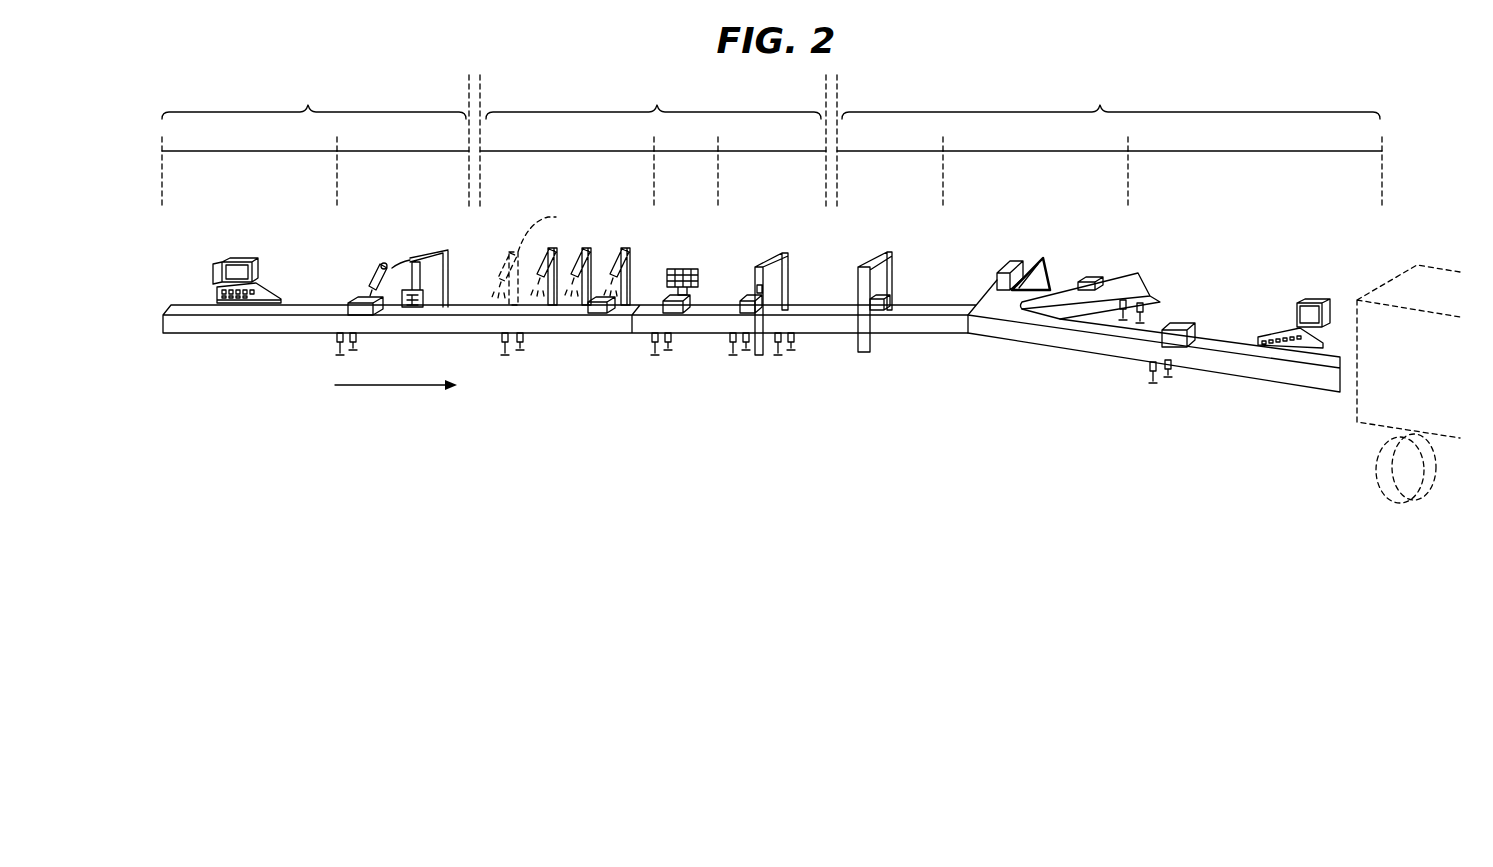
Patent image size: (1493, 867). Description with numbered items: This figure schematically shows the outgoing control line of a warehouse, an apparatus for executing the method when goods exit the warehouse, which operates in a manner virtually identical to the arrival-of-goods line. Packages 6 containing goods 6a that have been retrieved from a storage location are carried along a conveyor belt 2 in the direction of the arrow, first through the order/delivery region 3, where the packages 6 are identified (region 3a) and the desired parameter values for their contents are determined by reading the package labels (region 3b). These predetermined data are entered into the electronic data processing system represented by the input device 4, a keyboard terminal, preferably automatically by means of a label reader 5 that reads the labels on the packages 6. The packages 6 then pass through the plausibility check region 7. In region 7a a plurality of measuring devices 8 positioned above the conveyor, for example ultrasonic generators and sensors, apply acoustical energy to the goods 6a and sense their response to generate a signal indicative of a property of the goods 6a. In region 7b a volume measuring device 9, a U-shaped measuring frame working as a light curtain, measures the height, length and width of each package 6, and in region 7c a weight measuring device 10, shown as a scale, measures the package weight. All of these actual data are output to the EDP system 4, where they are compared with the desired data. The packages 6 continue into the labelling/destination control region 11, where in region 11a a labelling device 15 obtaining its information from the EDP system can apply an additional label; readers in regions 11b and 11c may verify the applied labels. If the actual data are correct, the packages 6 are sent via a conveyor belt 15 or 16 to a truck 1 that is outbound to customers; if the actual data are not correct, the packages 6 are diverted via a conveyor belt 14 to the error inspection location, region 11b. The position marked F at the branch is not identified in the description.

The truck 1 is at (1452, 427).
The conveyor belt 2 is at (928, 327).
The order/delivery region 3 is at (321, 141).
The package identification region 3a is at (249, 166).
The parameter determination region 3b is at (403, 139).
The input device 4 is at (257, 263).
The label reader 5 is at (381, 262).
The package 6 is at (357, 297).
The goods 6a is at (363, 310).
The plausibility check region 7 is at (661, 141).
The goods property measuring region 7a is at (567, 166).
The volume measuring region 7b is at (686, 166).
The weight measuring region 7c is at (772, 139).
The measuring devices 8 is at (617, 248).
The volume measuring device 9 is at (770, 253).
The weight measuring device 10 is at (670, 268).
The labelling/destination control region 11 is at (1111, 97).
The labelling region 11a is at (890, 166).
The error inspection location 11b is at (1035, 166).
The destination control region 11c is at (1255, 166).
The conveyor belt 14 is at (1048, 262).
The conveyor belt 15 is at (893, 270).
The conveyor belt 16 is at (1145, 273).
The reject position F is at (1027, 230).